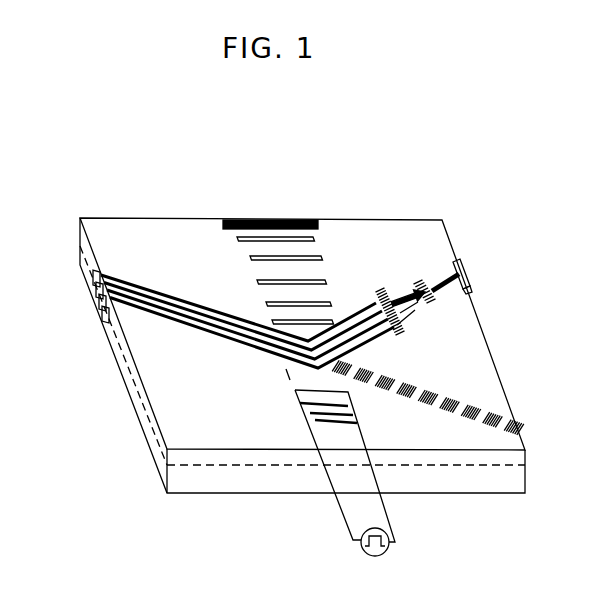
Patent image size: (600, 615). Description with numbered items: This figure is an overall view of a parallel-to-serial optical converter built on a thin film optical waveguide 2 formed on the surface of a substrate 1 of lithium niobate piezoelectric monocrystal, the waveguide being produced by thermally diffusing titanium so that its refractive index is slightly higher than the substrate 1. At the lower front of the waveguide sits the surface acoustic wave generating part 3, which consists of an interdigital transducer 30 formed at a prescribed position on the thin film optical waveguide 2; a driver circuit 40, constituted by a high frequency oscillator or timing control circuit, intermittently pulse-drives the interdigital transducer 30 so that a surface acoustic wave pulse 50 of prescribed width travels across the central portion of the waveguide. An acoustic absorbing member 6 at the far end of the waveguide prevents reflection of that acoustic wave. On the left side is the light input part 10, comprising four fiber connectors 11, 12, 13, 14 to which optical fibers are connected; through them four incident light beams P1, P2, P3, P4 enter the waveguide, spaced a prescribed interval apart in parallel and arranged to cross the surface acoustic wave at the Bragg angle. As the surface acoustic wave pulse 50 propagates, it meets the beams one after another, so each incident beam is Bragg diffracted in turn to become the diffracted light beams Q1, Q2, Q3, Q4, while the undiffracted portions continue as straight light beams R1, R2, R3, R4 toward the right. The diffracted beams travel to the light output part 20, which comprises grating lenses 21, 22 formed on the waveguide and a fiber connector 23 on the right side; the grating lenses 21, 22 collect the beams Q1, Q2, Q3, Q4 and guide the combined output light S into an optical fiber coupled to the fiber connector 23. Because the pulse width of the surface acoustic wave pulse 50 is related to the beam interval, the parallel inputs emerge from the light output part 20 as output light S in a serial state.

The substrate 1 is at (192, 478).
The thin film optical waveguide 2 is at (232, 457).
The surface acoustic wave generating part 3 is at (349, 497).
The acoustic absorbing member 6 is at (290, 222).
The light input part 10 is at (111, 350).
The fiber connector 11 is at (102, 318).
The fiber connector 12 is at (99, 303).
The fiber connector 13 is at (96, 290).
The fiber connector 14 is at (93, 276).
The light output part 20 is at (462, 262).
The grating lens 21 is at (412, 278).
The grating lens 22 is at (422, 278).
The fiber connector 23 is at (468, 279).
The interdigital transducer 30 is at (353, 413).
The driver circuit 40 is at (376, 557).
The surface acoustic wave pulse 50 is at (296, 374).
The incident light beam P1 is at (153, 314).
The incident light beam P2 is at (178, 313).
The incident light beam P3 is at (200, 313).
The incident light beam P4 is at (222, 312).
The diffracted light beam Q1 is at (341, 354).
The diffracted light beam Q2 is at (350, 340).
The diffracted light beam Q3 is at (360, 328).
The diffracted light beam Q4 is at (372, 305).
The straight light beam R1 is at (412, 382).
The straight light beam R2 is at (432, 388).
The straight light beam R3 is at (450, 394).
The straight light beam R4 is at (462, 392).
The output light S is at (445, 283).